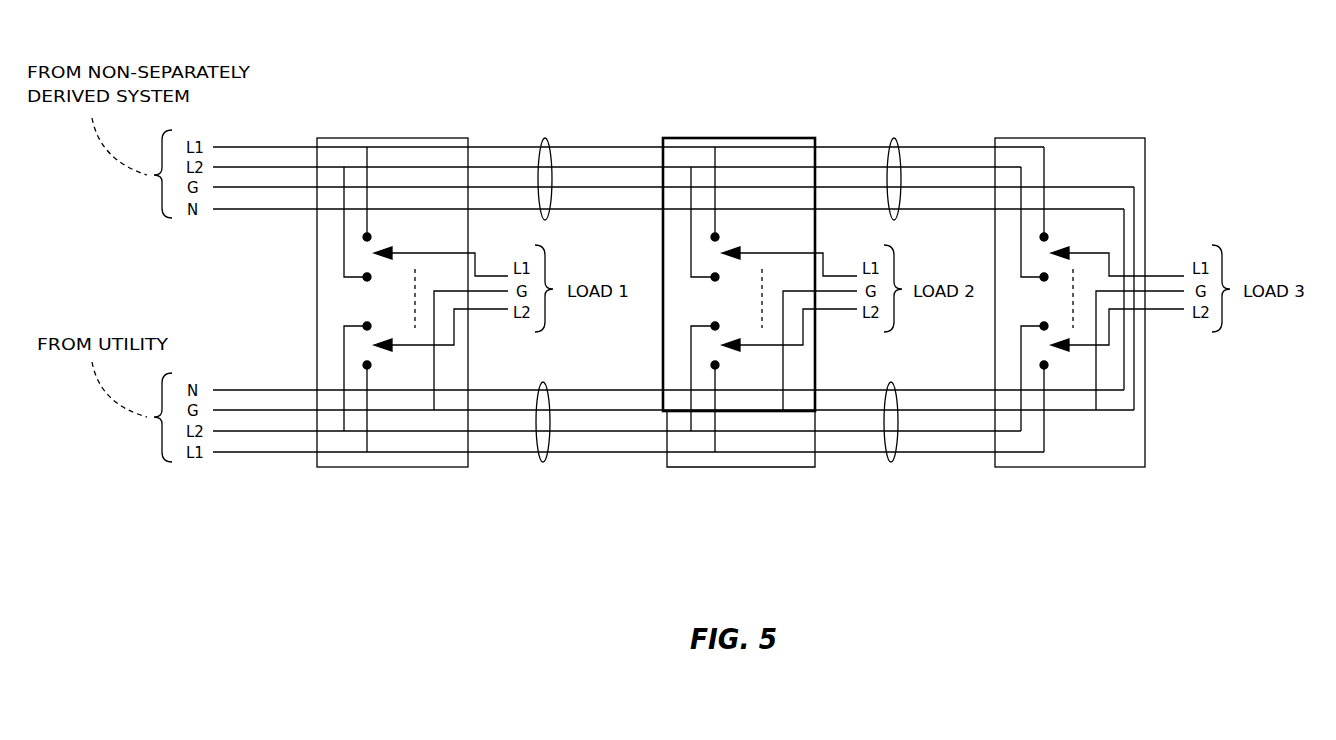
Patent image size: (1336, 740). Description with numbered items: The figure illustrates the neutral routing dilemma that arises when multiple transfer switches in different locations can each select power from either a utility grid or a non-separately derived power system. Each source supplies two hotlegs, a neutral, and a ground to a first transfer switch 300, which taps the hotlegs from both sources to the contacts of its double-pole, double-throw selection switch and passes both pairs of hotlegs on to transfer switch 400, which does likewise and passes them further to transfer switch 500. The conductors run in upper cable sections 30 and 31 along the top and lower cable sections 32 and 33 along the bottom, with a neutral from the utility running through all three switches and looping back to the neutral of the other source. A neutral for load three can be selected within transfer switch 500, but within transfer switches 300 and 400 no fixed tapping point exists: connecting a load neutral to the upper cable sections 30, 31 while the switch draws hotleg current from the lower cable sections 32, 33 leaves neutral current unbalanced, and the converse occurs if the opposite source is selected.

The first transfer switch 300 is at (427, 126).
The transfer switch 400 is at (719, 126).
The transfer switch 500 is at (1106, 126).
The upper cable section 30 is at (548, 137).
The upper cable section 31 is at (896, 137).
The lower cable section 32 is at (888, 467).
The lower cable section 33 is at (540, 467).